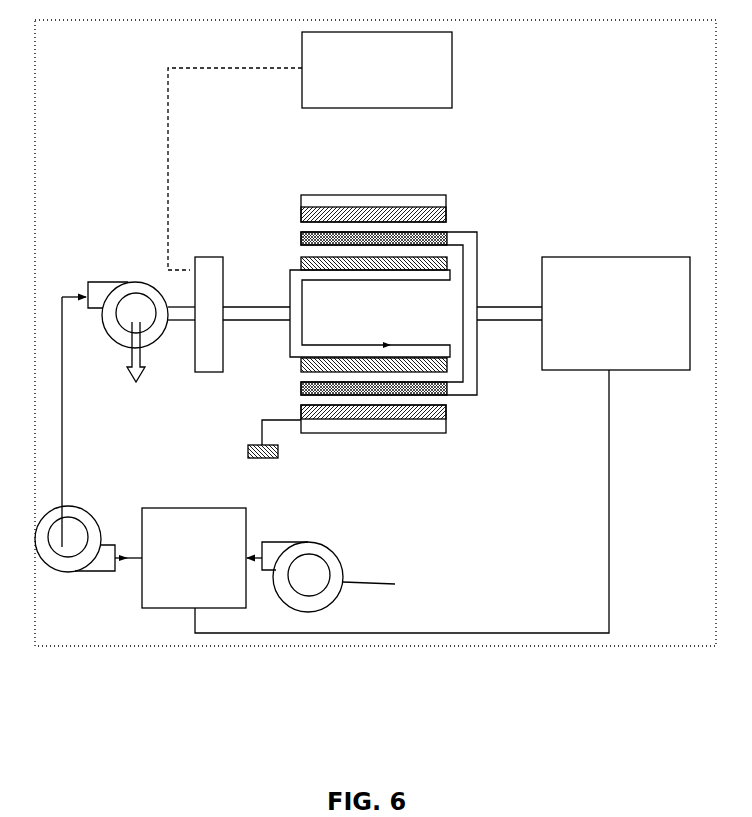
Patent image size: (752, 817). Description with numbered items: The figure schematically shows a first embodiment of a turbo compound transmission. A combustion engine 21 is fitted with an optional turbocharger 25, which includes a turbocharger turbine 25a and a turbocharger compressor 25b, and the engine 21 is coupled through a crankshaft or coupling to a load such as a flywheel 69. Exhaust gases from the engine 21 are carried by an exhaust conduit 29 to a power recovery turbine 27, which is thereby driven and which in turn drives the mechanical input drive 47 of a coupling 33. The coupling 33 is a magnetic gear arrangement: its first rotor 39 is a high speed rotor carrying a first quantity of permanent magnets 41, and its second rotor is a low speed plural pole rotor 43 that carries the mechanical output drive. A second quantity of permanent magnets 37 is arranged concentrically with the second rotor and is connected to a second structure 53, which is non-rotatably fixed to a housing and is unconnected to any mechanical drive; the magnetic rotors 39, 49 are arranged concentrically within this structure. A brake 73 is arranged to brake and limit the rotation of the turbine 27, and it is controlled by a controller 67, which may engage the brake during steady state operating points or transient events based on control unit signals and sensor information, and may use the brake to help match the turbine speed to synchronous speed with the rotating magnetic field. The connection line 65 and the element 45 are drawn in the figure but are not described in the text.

The combustion engine 21 is at (139, 597).
The turbocharger 25 is at (288, 532).
The turbocharger turbine 25a is at (88, 520).
The turbocharger compressor 25b is at (381, 585).
The power recovery turbine 27 is at (130, 280).
The exhaust conduit 29 is at (63, 447).
The coupling 33 is at (517, 195).
The second quantity of permanent magnets 37 is at (300, 218).
The first rotor 39 is at (288, 345).
The first quantity of permanent magnets 41 is at (302, 262).
The plural pole rotor 43 is at (298, 243).
The belt 45 is at (92, 492).
The mechanical input drive 47 is at (262, 307).
The magnetic rotor 49 is at (483, 395).
The second structure 53 is at (452, 197).
The power cable 65 is at (610, 527).
The controller 67 is at (302, 55).
The flywheel 69 is at (637, 372).
The brake 73 is at (207, 253).